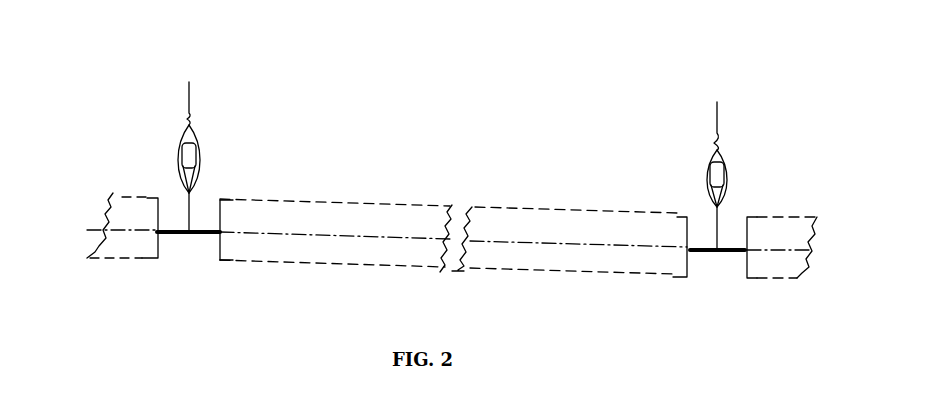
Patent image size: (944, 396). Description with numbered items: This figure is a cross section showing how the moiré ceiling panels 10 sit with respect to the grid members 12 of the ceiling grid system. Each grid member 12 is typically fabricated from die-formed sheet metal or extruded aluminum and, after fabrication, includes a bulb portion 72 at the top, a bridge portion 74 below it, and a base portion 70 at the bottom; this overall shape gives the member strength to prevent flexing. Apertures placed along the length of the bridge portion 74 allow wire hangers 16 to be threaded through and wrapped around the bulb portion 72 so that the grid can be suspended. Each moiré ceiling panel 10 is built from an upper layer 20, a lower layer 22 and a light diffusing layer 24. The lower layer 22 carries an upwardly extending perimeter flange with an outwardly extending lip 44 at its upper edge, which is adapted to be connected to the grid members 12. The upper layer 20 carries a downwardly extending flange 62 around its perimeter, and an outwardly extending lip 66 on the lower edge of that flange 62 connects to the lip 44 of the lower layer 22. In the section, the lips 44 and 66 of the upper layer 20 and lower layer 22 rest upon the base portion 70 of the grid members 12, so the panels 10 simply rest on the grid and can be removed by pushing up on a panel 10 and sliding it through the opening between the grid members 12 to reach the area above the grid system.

The moiré ceiling panel 10 is at (214, 237).
The grid member 12 is at (212, 200).
The wire hanger 16 is at (190, 100).
The upper layer 20 is at (540, 208).
The lower layer 22 is at (507, 272).
The light diffusing layer 24 is at (327, 202).
The outwardly extending lip 44 is at (197, 236).
The downwardly extending flange 62 is at (687, 232).
The outwardly extending lip 66 is at (219, 197).
The base portion 70 is at (175, 236).
The bulb portion 72 is at (177, 150).
The bridge portion 74 is at (183, 210).